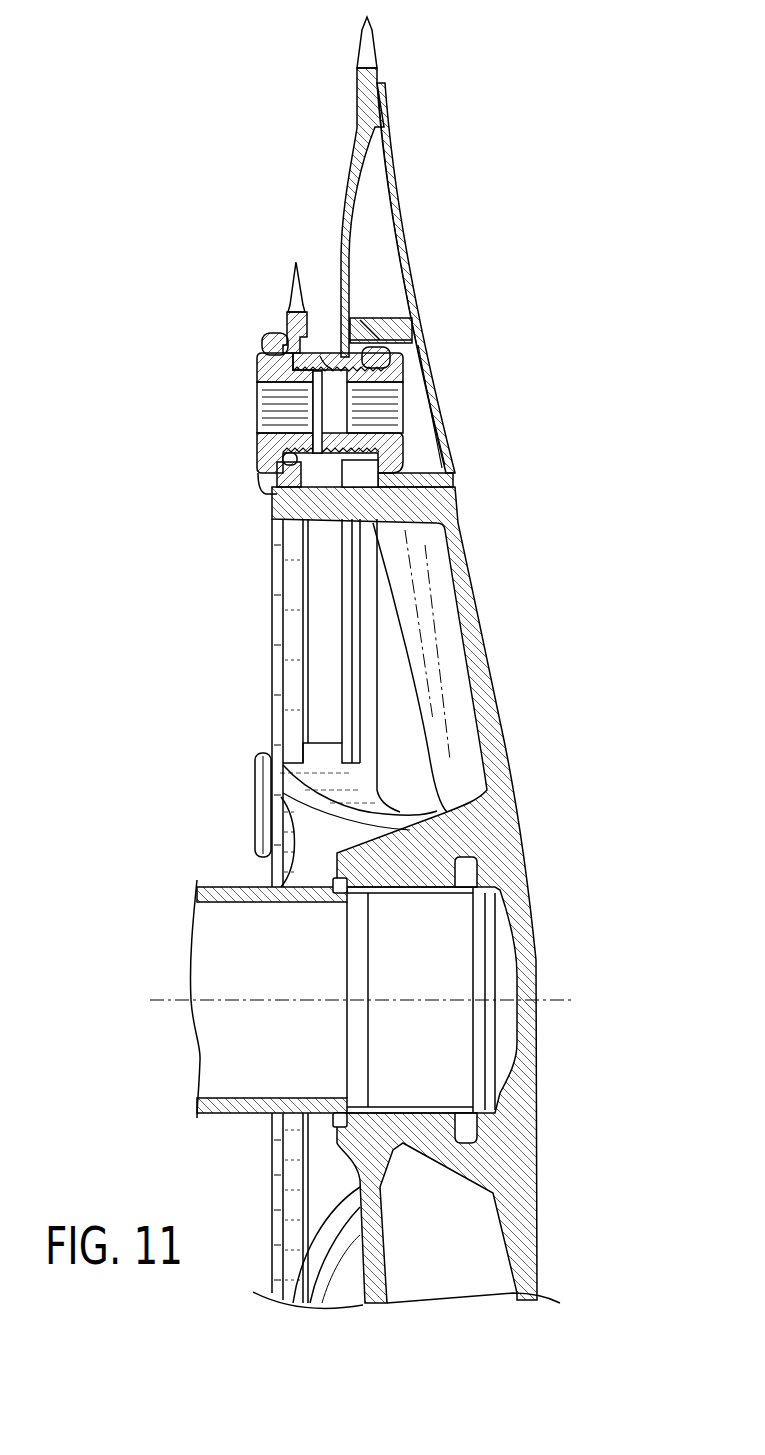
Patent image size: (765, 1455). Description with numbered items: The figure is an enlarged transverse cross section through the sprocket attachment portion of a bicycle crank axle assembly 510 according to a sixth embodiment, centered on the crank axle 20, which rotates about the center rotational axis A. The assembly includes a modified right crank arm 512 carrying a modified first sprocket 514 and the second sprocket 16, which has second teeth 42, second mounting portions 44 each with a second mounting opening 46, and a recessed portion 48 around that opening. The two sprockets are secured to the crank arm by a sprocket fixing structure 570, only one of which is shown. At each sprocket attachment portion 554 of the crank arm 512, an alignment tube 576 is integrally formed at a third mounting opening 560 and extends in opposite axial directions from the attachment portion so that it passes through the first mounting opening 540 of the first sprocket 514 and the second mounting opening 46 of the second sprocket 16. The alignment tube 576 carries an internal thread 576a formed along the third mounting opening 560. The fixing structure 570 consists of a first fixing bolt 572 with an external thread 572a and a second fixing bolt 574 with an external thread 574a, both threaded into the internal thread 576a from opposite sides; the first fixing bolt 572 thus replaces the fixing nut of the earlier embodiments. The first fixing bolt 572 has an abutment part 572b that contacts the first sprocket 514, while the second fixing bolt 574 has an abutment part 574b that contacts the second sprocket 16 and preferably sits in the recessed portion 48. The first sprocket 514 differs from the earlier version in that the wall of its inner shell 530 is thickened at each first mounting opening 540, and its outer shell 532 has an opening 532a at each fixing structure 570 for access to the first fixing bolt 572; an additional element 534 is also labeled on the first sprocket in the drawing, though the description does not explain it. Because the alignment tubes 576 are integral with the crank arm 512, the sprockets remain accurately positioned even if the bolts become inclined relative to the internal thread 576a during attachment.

The bicycle crank axle assembly 510 is at (137, 259).
The right crank arm 512 is at (482, 616).
The first sprocket 514 is at (410, 227).
The inner shell 530 is at (340, 190).
The outer shell 532 is at (396, 187).
The opening 532a is at (439, 400).
The nose cone retaining member 534 is at (412, 331).
The first mounting opening 540 is at (406, 433).
The sprocket attachment portion 554 is at (282, 548).
The third mounting opening 560 is at (262, 431).
The sprocket fixing structure 570 is at (186, 450).
The first fixing bolt 572 is at (407, 457).
The external thread 572a is at (388, 347).
The abutment part 572b is at (406, 362).
The second fixing bolt 574 is at (252, 390).
The external thread 574a is at (280, 518).
The abutment part 574b is at (255, 372).
The alignment tube 576 is at (283, 290).
The internal thread 576a is at (328, 362).
The second teeth 42 is at (290, 283).
The second mounting portion 44 is at (276, 482).
The second mounting opening 46 is at (280, 458).
The recessed portion 48 is at (262, 355).
The second sprocket 16 is at (270, 660).
The crank axle 20 is at (215, 883).
The center rotational axis A is at (154, 997).